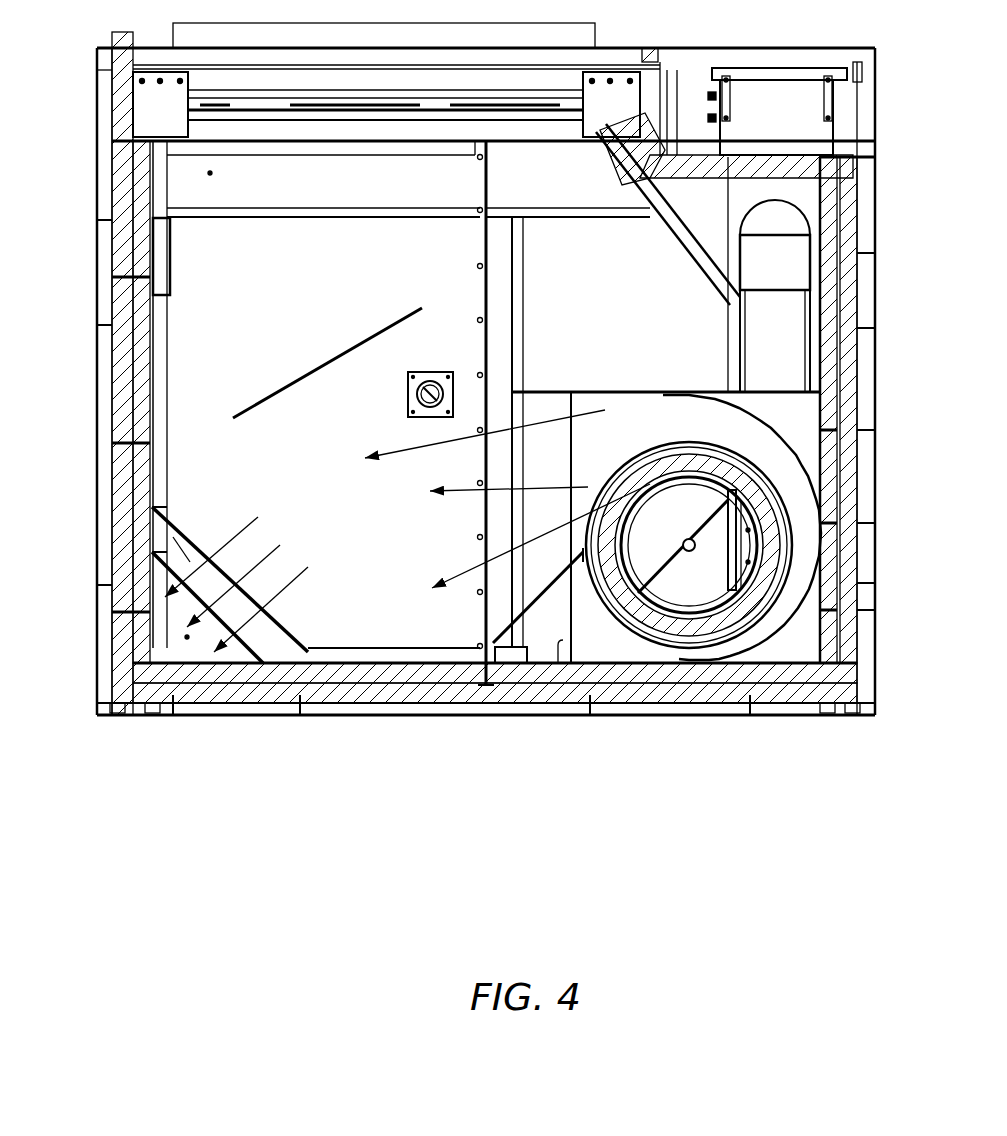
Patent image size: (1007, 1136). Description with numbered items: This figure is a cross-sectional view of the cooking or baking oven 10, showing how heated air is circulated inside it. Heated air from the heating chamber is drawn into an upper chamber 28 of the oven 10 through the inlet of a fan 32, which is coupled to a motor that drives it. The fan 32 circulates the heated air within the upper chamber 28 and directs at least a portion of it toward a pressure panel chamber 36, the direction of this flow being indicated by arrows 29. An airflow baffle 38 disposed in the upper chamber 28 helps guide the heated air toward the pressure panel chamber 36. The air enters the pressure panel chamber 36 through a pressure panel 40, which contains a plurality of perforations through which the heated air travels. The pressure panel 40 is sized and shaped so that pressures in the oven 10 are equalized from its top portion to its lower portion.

The cooking or baking oven 10 is at (275, 745).
The upper chamber 28 is at (745, 443).
The arrows 29 is at (463, 577).
The fan 32 is at (723, 622).
The pressure panel chamber 36 is at (200, 652).
The airflow baffle 38 is at (262, 400).
The pressure panel 40 is at (145, 580).